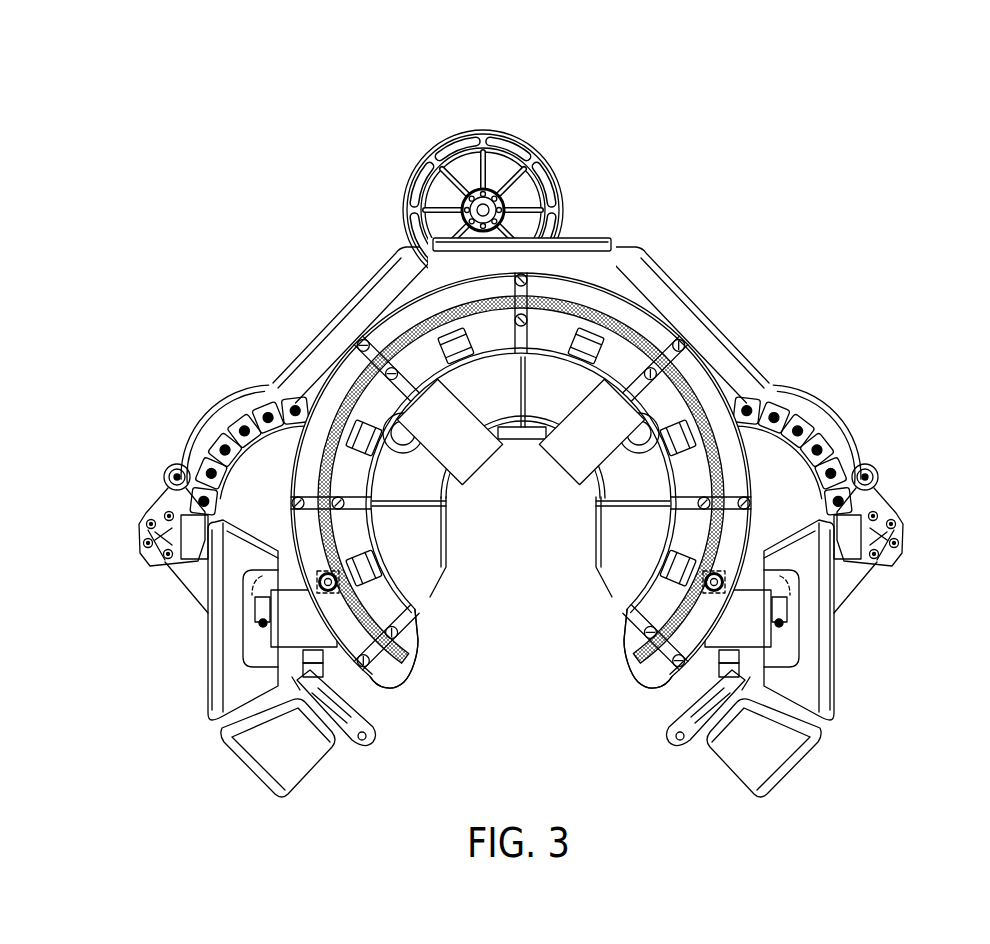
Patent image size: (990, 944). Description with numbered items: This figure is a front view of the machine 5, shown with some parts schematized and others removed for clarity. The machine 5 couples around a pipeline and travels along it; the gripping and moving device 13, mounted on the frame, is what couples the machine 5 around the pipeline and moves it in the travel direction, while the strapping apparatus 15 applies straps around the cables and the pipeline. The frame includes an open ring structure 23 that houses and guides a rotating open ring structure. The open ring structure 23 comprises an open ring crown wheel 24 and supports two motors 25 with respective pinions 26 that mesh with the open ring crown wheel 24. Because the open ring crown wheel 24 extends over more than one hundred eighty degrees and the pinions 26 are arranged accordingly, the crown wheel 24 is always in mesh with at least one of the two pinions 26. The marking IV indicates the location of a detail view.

The machine 5 is at (281, 130).
The gripping and moving device 13 is at (190, 689).
The strapping apparatus 15 is at (636, 108).
The open ring structure 23 is at (728, 358).
The open ring crown wheel 24 is at (641, 342).
The motors 25 is at (272, 572).
The pinions 26 is at (399, 688).
The section view indicator IV is at (836, 684).